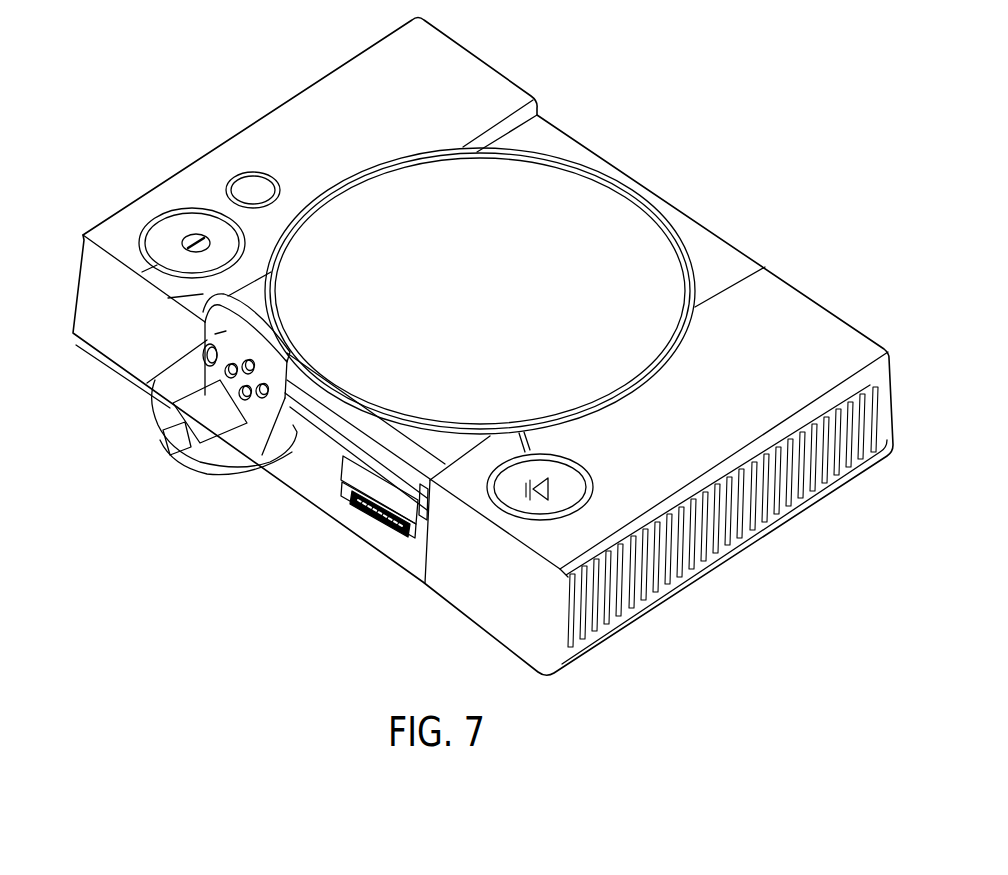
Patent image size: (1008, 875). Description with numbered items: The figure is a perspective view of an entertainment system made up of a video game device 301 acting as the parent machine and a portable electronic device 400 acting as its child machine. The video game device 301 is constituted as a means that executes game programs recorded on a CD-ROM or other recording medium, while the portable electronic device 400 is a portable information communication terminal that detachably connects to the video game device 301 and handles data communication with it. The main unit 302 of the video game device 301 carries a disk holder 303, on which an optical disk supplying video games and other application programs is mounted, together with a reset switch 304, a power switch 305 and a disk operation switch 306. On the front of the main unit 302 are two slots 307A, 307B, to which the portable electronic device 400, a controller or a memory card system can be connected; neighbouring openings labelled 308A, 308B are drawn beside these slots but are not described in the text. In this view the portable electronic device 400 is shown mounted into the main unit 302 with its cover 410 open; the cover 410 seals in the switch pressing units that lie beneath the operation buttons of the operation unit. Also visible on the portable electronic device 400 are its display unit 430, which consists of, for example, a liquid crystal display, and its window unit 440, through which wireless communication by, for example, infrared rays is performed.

The video game device 301 is at (729, 160).
The main unit 302 is at (803, 322).
The disk holder 303 is at (600, 198).
The reset switch 304 is at (242, 187).
The power switch 305 is at (163, 230).
The disk operation switch 306 is at (573, 485).
The slot 307A is at (310, 447).
The slot 307B is at (403, 540).
The memory card slot 308A is at (358, 522).
The memory card slot 308B is at (423, 497).
The portable electronic device 400 is at (162, 406).
The cover 410 is at (141, 387).
The display unit 430 is at (233, 430).
The window unit 440 is at (172, 452).